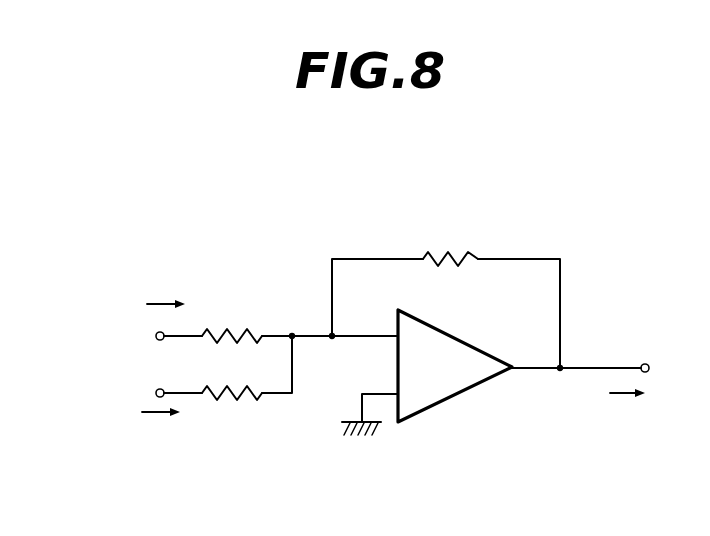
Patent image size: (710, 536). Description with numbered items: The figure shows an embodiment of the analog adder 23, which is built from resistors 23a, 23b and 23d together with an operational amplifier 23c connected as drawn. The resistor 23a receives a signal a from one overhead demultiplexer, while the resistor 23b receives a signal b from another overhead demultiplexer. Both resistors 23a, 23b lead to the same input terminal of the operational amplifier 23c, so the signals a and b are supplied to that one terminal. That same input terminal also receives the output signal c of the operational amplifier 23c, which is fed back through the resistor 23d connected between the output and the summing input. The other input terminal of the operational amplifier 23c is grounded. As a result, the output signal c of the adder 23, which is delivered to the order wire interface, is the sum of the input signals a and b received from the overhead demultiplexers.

The adder 23 is at (405, 352).
The resistor 23a is at (231, 331).
The resistor 23b is at (235, 401).
The operational amplifier 23c is at (445, 402).
The resistor 23d is at (440, 266).